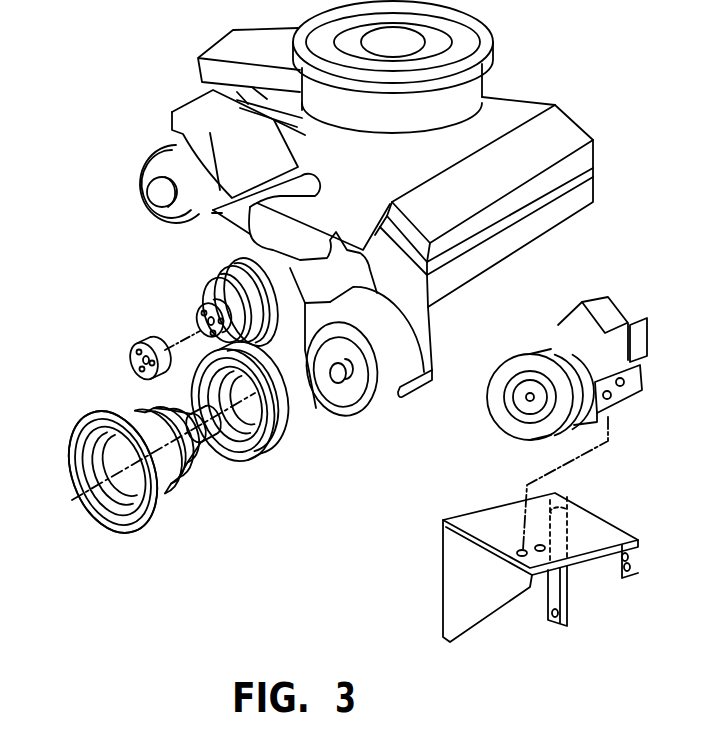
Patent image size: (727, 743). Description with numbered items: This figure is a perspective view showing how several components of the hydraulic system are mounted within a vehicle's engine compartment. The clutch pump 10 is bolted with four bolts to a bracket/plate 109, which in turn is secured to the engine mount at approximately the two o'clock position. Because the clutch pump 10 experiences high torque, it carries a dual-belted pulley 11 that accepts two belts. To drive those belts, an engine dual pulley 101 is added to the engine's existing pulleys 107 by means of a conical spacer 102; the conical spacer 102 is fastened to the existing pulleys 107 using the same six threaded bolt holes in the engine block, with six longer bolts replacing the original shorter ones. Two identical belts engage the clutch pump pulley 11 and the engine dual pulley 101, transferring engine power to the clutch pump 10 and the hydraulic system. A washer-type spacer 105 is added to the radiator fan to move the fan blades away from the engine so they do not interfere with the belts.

The clutch pump 10 is at (574, 393).
The dual-belted pulley 11 is at (522, 353).
The dual pulley 101 is at (146, 530).
The conical spacer 102 is at (186, 410).
The washer-type spacer 105 is at (137, 347).
The existing pulleys 107 is at (262, 455).
The bracket/plate 109 is at (590, 522).